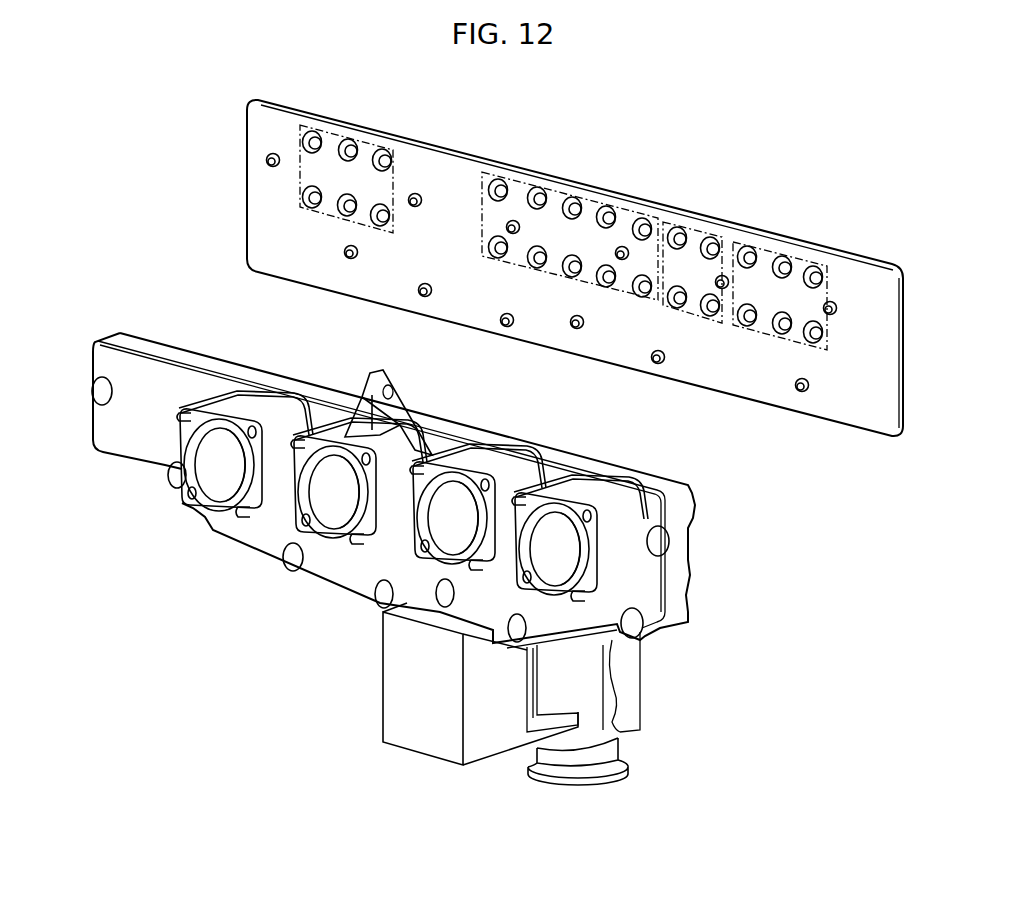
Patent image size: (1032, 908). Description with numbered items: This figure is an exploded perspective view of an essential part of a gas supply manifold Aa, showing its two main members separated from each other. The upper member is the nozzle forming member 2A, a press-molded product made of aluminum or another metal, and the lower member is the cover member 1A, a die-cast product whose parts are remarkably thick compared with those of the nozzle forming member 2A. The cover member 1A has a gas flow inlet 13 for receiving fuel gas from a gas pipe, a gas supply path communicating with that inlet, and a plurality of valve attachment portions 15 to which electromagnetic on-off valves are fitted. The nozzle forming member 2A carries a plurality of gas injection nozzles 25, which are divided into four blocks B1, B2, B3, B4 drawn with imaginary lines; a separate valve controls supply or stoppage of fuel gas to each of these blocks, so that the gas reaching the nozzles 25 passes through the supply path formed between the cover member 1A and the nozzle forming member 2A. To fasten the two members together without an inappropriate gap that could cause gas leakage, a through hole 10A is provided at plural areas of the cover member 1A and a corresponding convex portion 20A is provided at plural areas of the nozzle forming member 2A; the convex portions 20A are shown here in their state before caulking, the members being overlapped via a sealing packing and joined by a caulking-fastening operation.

The gas supply manifold Aa is at (166, 152).
The nozzle forming member 2A is at (456, 148).
The cover member 1A is at (243, 362).
The first block B1 is at (374, 143).
The second block B2 is at (548, 186).
The third block B3 is at (690, 228).
The fourth block B4 is at (757, 248).
The gas injection nozzle 25 is at (345, 142).
The convex portion 20A is at (272, 167).
The through hole 10A is at (97, 396).
The valve attachment portion 15 is at (213, 503).
The gas flow inlet 13 is at (596, 782).